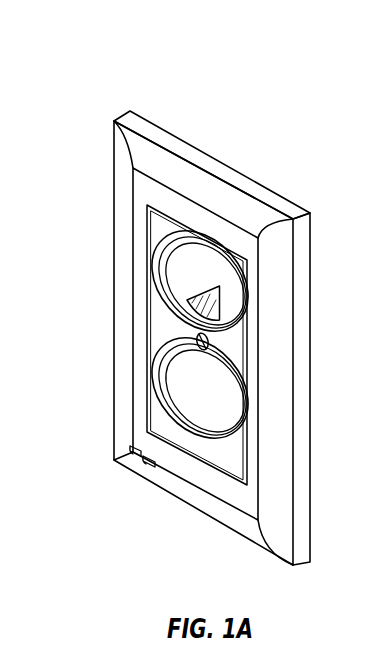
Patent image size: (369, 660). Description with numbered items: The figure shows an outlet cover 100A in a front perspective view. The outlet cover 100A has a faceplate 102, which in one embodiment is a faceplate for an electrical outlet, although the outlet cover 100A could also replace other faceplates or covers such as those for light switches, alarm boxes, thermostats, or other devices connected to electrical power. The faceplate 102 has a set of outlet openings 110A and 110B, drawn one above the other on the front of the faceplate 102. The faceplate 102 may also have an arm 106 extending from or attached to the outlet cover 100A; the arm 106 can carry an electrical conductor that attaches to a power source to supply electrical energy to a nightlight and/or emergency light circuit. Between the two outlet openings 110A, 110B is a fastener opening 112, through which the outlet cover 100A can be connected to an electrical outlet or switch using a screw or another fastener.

The outlet cover 100A is at (133, 54).
The faceplate 102 is at (250, 522).
The arm 106 is at (175, 298).
The outlet opening 110A is at (188, 260).
The outlet opening 110B is at (188, 373).
The fastener opening 112 is at (199, 339).